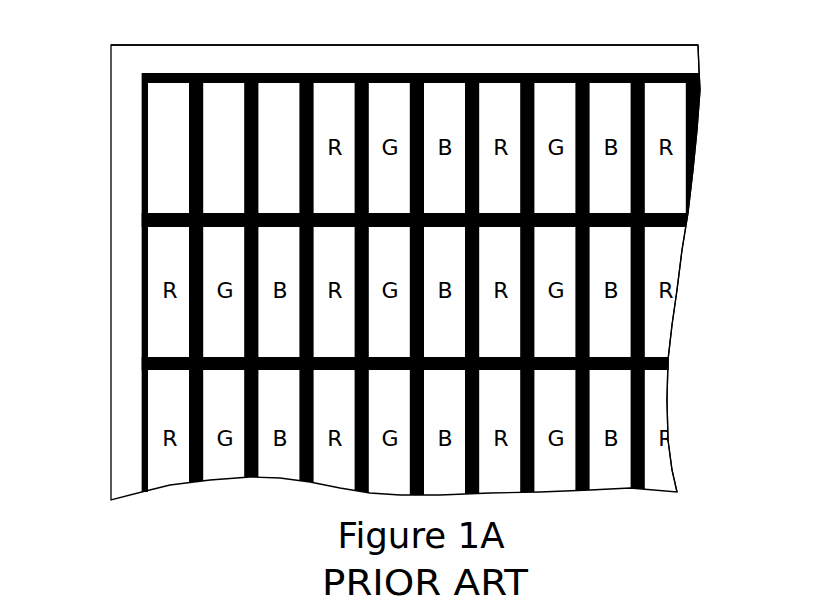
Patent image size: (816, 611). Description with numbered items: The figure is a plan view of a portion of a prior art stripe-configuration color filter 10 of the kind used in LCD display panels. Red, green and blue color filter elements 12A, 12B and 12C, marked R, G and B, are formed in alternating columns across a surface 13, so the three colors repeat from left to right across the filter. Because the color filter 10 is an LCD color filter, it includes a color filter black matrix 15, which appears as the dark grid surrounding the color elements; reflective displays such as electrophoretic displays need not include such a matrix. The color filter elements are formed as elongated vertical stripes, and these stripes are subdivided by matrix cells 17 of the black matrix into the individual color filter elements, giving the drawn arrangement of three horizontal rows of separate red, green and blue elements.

The color filter 10 is at (86, 392).
The red color filter element 12A is at (161, 95).
The green color filter element 12B is at (223, 95).
The blue color filter element 12C is at (277, 95).
The surface 13 is at (575, 66).
The color filter black matrix 15 is at (700, 100).
The matrix cells 17 is at (141, 387).